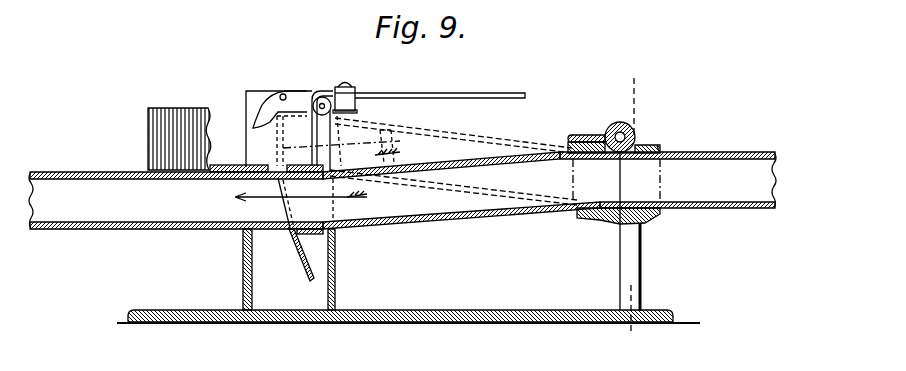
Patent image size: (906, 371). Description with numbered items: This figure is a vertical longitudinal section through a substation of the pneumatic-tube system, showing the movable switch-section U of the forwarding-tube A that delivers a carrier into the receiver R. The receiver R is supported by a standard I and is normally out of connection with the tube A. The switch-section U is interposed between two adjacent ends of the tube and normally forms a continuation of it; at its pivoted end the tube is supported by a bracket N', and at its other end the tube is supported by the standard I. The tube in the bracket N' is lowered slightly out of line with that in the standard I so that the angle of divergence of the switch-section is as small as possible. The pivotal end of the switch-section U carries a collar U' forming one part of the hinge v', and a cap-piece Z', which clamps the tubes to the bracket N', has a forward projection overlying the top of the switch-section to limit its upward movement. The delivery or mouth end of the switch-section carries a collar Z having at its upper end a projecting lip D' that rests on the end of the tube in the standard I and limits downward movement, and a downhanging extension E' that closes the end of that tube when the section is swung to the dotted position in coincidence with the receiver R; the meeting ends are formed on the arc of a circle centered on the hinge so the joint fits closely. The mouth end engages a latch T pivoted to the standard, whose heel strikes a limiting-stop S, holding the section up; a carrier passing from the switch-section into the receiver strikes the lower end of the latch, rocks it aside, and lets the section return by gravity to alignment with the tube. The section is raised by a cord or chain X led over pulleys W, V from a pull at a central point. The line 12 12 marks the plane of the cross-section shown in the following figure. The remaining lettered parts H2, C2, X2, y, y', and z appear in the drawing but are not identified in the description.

The forwarding-tube A is at (402, 190).
The receiver R is at (185, 115).
The projecting lip D' is at (266, 142).
The limiting-stop S is at (297, 90).
The latch T is at (275, 93).
The pulley V is at (322, 98).
The pulley W is at (350, 88).
The cord or chain X is at (440, 84).
The collar Z is at (329, 141).
The strap or belt H2 is at (365, 133).
The movable switch-section U is at (441, 141).
The collar U' is at (581, 188).
The hinge v' is at (616, 131).
The collar C2 is at (637, 148).
The cap-piece Z' is at (662, 180).
The yoke X2 is at (600, 221).
The bracket N' is at (605, 231).
The post y' is at (643, 267).
The section line 12 is at (639, 207).
The standard I is at (243, 266).
The downhanging extension E' is at (294, 231).
The stop block z is at (315, 234).
The hidden rod y is at (348, 217).